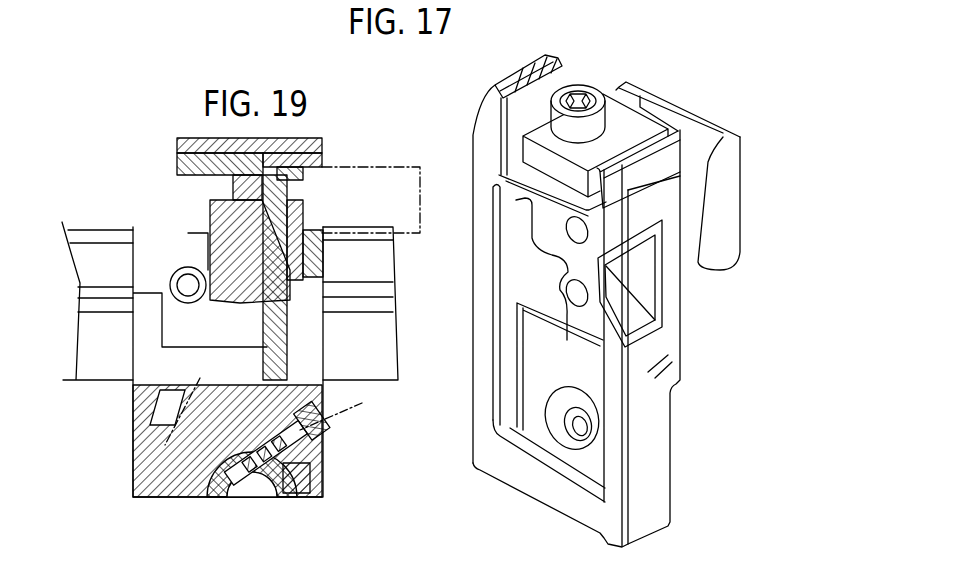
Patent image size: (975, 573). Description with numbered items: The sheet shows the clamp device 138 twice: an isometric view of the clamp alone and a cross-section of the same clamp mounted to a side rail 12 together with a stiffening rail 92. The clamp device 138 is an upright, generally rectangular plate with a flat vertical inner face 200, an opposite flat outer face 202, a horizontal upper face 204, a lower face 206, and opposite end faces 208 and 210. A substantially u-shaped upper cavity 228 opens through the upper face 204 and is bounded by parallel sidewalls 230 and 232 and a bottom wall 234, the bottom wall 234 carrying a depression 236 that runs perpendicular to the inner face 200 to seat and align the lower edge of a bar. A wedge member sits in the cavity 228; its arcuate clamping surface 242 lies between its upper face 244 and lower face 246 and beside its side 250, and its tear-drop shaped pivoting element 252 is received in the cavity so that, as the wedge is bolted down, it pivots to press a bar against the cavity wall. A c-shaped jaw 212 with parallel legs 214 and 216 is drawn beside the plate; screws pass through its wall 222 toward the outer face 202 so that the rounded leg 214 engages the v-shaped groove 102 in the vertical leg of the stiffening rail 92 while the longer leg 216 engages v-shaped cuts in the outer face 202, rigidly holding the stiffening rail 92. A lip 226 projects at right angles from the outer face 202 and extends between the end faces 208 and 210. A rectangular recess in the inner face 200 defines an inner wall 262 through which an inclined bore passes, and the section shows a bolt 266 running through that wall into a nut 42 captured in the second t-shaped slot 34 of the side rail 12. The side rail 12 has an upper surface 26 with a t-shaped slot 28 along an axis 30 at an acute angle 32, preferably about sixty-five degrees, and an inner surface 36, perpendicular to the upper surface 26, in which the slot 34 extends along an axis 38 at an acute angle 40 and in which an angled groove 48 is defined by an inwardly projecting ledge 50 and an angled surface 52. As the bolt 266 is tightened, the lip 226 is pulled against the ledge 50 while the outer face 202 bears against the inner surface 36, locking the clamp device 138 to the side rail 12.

In FIG. 19, the side rail 12 is at (157, 502).
In FIG. 19, the upper surface 26 is at (132, 372).
In FIG. 19, the t-shaped slot 28 is at (160, 420).
In FIG. 19, the axis 30 is at (128, 510).
In FIG. 19, the acute angle 32 is at (223, 377).
In FIG. 19, the second t-shaped slot 34 is at (233, 480).
In FIG. 19, the inner surface 36 is at (290, 477).
In FIG. 19, the axis 38 is at (333, 415).
In FIG. 19, the acute angle 40 is at (308, 417).
In FIG. 19, the nut 42 is at (260, 480).
In FIG. 19, the angled groove 48 is at (313, 437).
In FIG. 19, the inwardly projecting ledge 50 is at (225, 447).
In FIG. 19, the angled surface 52 is at (247, 380).
In FIG. 19, the stiffening rail 92 is at (188, 138).
In FIG. 19, the v-shaped groove 102 is at (247, 197).
In FIG. 17, the clamp device 138 is at (668, 540).
In FIG. 17, the inner face 200 is at (523, 467).
In FIG. 17, the outer face 202 is at (673, 488).
In FIG. 17, the upper face 204 is at (543, 52).
In FIG. 17, the lower face 206 is at (550, 496).
In FIG. 17, the end face 208 is at (475, 298).
In FIG. 17, the end face 210 is at (520, 413).
In FIG. 17, the c-shaped jaw 212 is at (748, 247).
In FIG. 19, the c-shaped jaw 212 is at (193, 222).
In FIG. 17, the leg 214 is at (617, 100).
In FIG. 19, the leg 214 is at (217, 195).
In FIG. 17, the leg 216 is at (708, 290).
In FIG. 17, the wall 222 is at (745, 175).
In FIG. 17, the lip 226 is at (677, 387).
In FIG. 17, the u-shaped upper cavity 228 is at (563, 77).
In FIG. 17, the sidewall 230 is at (487, 105).
In FIG. 17, the sidewall 232 is at (680, 165).
In FIG. 17, the bottom wall 234 is at (560, 217).
In FIG. 17, the depression 236 is at (523, 165).
In FIG. 17, the clamping surface 242 is at (497, 80).
In FIG. 17, the upper face 244 is at (620, 147).
In FIG. 17, the lower face 246 is at (560, 220).
In FIG. 17, the side 250 is at (528, 147).
In FIG. 17, the pivoting element 252 is at (607, 230).
In FIG. 17, the inner wall 262 is at (533, 360).
In FIG. 17, the bolt 266 is at (577, 443).